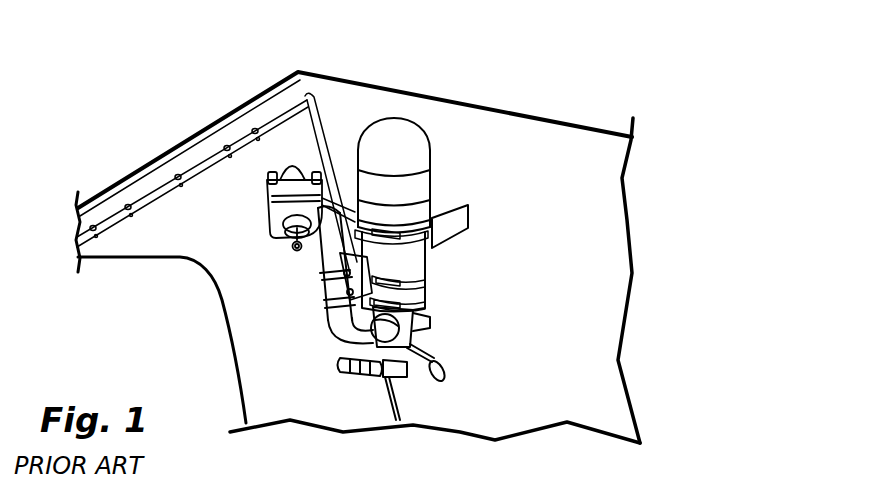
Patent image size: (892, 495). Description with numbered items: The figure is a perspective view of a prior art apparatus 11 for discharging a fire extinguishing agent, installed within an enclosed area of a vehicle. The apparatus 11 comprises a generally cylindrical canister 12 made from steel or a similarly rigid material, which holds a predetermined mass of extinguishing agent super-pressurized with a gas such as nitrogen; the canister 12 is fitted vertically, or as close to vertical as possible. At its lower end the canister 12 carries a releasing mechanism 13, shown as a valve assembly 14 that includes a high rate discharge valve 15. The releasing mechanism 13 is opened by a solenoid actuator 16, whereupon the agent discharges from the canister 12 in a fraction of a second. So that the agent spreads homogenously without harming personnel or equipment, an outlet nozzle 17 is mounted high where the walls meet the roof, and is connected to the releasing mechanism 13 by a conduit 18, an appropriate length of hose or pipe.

The apparatus 11 is at (490, 146).
The canister 12 is at (404, 133).
The releasing mechanism 13 is at (433, 346).
The valve assembly 14 is at (403, 384).
The high rate discharge valve 15 is at (360, 352).
The solenoid actuator 16 is at (378, 383).
The outlet nozzle 17 is at (292, 250).
The conduit 18 is at (317, 257).